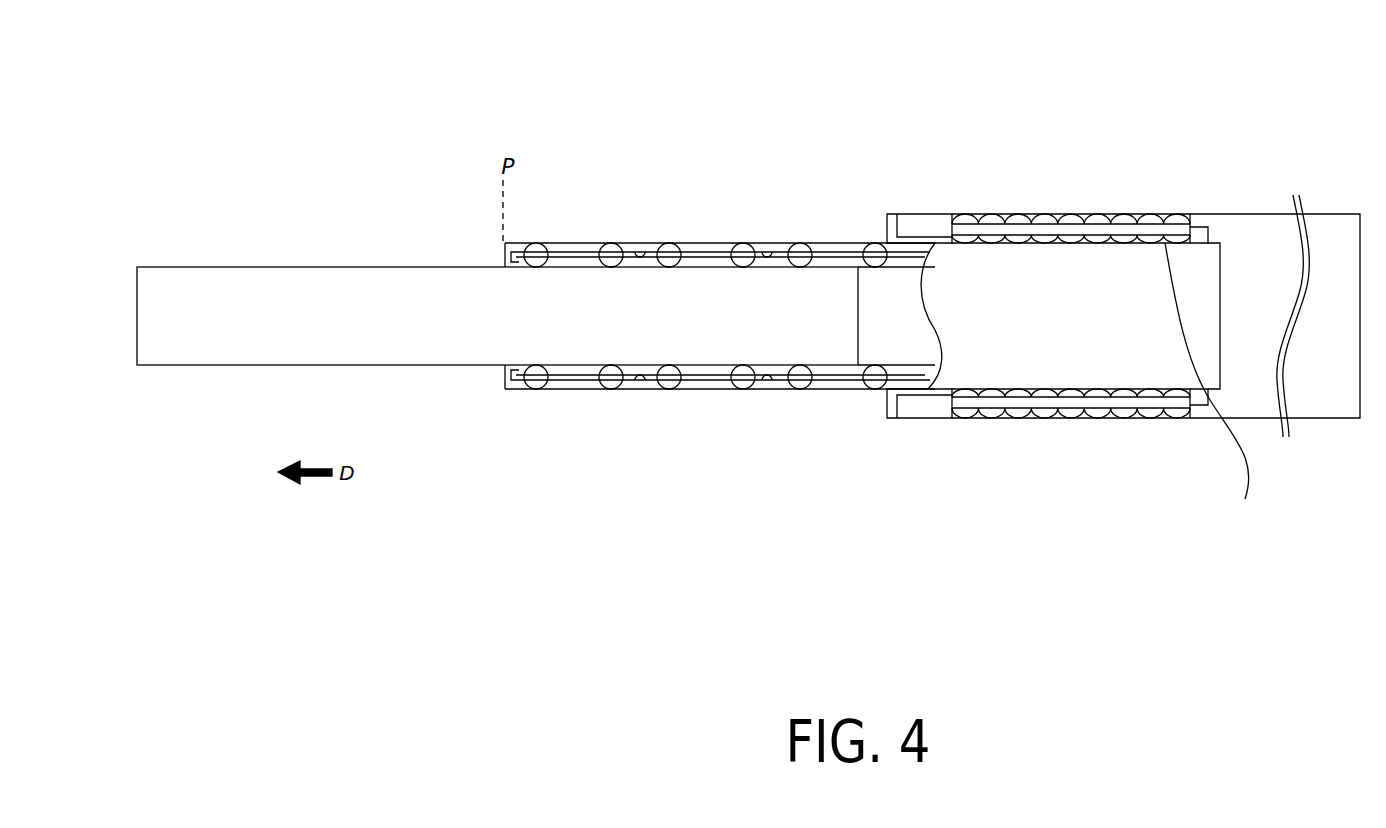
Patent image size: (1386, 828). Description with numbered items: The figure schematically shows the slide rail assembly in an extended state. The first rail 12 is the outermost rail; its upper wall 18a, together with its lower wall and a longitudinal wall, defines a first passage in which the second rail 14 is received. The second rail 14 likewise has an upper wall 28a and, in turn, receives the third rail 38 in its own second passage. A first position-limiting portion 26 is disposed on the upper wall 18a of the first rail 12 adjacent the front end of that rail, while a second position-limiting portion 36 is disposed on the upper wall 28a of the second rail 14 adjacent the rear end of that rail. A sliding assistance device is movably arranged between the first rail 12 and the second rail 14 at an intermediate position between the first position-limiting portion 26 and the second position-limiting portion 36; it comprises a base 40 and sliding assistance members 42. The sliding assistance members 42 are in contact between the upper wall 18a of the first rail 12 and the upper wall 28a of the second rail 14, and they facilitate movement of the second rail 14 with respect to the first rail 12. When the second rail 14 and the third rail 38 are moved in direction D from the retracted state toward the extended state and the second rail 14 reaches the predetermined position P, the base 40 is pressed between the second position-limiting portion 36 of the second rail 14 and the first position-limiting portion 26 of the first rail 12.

The first rail 12 is at (1337, 208).
The second rail 14 is at (699, 237).
The upper wall 18a is at (1257, 213).
The first position-limiting portion 26 is at (925, 226).
The upper wall 28a is at (1218, 385).
The second position-limiting portion 36 is at (1212, 229).
The third rail 38 is at (255, 265).
The base 40 is at (1060, 230).
The sliding assistance members 42 is at (990, 217).